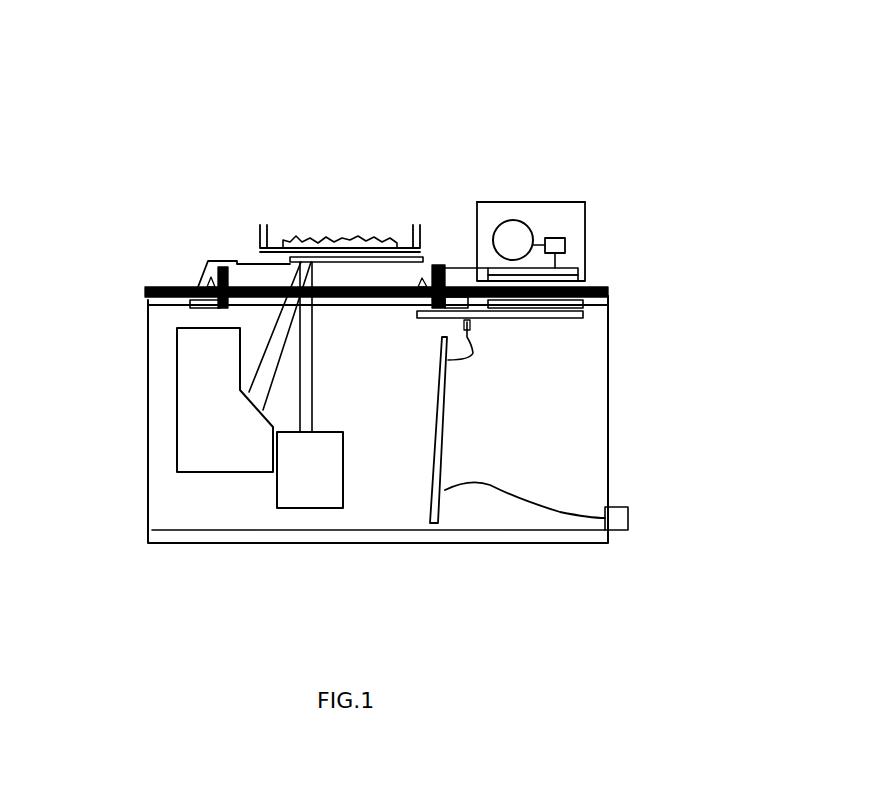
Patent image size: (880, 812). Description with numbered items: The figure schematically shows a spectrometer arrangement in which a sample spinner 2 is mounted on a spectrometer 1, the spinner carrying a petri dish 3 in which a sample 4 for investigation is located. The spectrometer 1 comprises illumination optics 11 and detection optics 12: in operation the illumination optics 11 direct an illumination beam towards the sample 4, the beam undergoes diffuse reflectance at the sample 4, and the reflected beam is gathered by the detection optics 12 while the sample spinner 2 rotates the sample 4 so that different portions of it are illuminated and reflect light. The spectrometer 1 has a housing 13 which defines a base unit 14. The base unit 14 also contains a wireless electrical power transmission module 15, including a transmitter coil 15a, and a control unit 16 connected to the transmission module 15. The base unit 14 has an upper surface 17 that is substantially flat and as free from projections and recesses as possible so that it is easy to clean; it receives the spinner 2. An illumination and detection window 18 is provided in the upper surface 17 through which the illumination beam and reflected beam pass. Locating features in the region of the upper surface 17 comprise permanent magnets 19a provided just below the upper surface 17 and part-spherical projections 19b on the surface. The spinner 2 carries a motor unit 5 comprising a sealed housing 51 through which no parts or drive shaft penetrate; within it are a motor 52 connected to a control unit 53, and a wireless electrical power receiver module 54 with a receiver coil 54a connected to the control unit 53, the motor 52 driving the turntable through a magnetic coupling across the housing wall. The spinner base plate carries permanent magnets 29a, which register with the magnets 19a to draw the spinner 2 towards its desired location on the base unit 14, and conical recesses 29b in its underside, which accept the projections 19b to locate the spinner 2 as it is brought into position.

The spectrometer 1 is at (140, 428).
The sample spinner 2 is at (210, 250).
The petri dish 3 is at (265, 255).
The sample 4 is at (358, 243).
The motor unit 5 is at (553, 215).
The illumination optics 11 is at (323, 500).
The detection optics 12 is at (203, 457).
The housing 13 is at (147, 322).
The base unit 14 is at (156, 375).
The wireless electrical power transmission module 15 is at (583, 318).
The transmitter coil 15a is at (583, 304).
The control unit 16 is at (445, 445).
The upper surface 17 is at (609, 287).
The illumination and detection window 18 is at (262, 268).
The permanent magnets 19a is at (146, 299).
The projections 19b is at (196, 285).
The permanent magnets 29a is at (460, 285).
The recesses 29b is at (437, 265).
The sealed housing 51 is at (494, 202).
The motor 52 is at (514, 232).
The control unit 53 is at (566, 242).
The wireless electrical power receiver module 54 is at (586, 270).
The receiver coil 54a is at (583, 278).